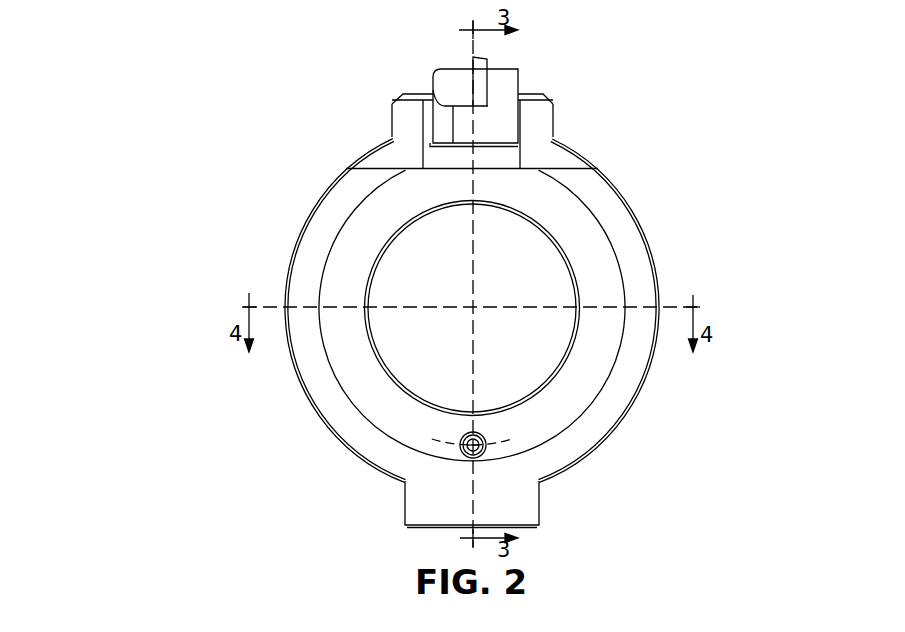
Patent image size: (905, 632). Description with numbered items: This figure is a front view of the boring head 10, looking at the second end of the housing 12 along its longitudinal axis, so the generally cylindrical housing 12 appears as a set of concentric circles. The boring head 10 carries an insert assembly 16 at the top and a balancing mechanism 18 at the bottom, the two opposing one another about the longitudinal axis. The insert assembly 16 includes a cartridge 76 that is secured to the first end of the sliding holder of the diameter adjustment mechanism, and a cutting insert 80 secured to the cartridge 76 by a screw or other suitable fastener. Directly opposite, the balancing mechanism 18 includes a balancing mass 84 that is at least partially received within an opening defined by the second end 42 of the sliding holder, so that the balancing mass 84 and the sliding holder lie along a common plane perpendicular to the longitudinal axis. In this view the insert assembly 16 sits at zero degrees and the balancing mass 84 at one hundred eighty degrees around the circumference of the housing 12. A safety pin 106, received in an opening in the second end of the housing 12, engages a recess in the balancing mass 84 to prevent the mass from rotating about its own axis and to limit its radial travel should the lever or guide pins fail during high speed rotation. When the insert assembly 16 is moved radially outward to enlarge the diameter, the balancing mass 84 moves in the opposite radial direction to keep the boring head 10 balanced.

The boring head 10 is at (213, 205).
The housing 12 is at (605, 198).
The insert assembly 16 is at (526, 91).
The balancing mechanism 18 is at (404, 501).
The second end of the sliding holder 42 is at (605, 252).
The cartridge 76 is at (505, 118).
The cutting insert 80 is at (480, 72).
The balancing mass 84 is at (532, 507).
The safety pin 106 is at (487, 443).